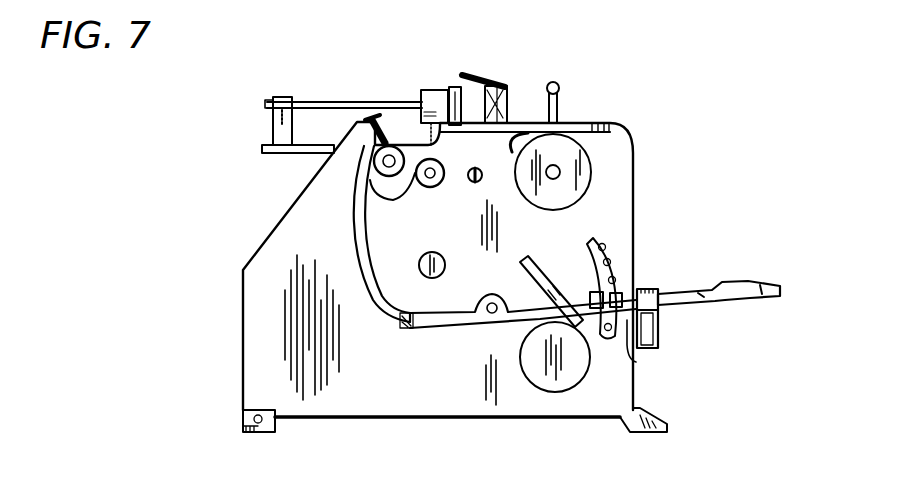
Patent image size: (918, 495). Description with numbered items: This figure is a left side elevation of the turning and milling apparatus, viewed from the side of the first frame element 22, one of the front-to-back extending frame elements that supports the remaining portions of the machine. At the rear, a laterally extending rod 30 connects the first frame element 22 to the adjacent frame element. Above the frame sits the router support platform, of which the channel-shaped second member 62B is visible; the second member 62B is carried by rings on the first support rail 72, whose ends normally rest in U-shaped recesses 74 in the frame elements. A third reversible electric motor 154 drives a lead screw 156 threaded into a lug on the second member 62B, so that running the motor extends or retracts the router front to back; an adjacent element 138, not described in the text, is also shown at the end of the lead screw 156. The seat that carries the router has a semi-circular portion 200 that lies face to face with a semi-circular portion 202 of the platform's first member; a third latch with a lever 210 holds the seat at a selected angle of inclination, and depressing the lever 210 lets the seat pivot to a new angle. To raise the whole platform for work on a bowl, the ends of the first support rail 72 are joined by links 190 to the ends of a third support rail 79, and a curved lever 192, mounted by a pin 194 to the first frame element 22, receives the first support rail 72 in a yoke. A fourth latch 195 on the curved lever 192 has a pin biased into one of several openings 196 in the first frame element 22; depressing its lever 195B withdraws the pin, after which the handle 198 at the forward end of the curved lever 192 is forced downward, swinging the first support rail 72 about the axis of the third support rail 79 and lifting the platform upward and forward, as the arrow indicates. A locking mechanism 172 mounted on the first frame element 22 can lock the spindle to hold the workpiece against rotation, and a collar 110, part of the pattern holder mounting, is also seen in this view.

The first frame element 22 is at (438, 407).
The laterally extending rod 30 is at (255, 432).
The second member 62B is at (290, 155).
The first support rail 72 is at (403, 120).
The U-shaped recess 74 is at (394, 186).
The third support rail 79 is at (430, 187).
The collar 110 is at (658, 328).
The support post 138 is at (270, 118).
The third reversible electric motor 154 is at (432, 90).
The lead screw 156 is at (310, 97).
The locking mechanism 172 is at (575, 107).
The link 190 is at (414, 205).
The curved lever 192 is at (393, 308).
The pin 194 is at (492, 314).
The fourth latch 195 is at (627, 316).
The lever 195B is at (640, 288).
The openings 196 is at (596, 262).
The handle 198 is at (756, 284).
The semi-circular portion 200 is at (512, 112).
The semi-circular portion 202 is at (470, 160).
The lever 210 is at (458, 86).